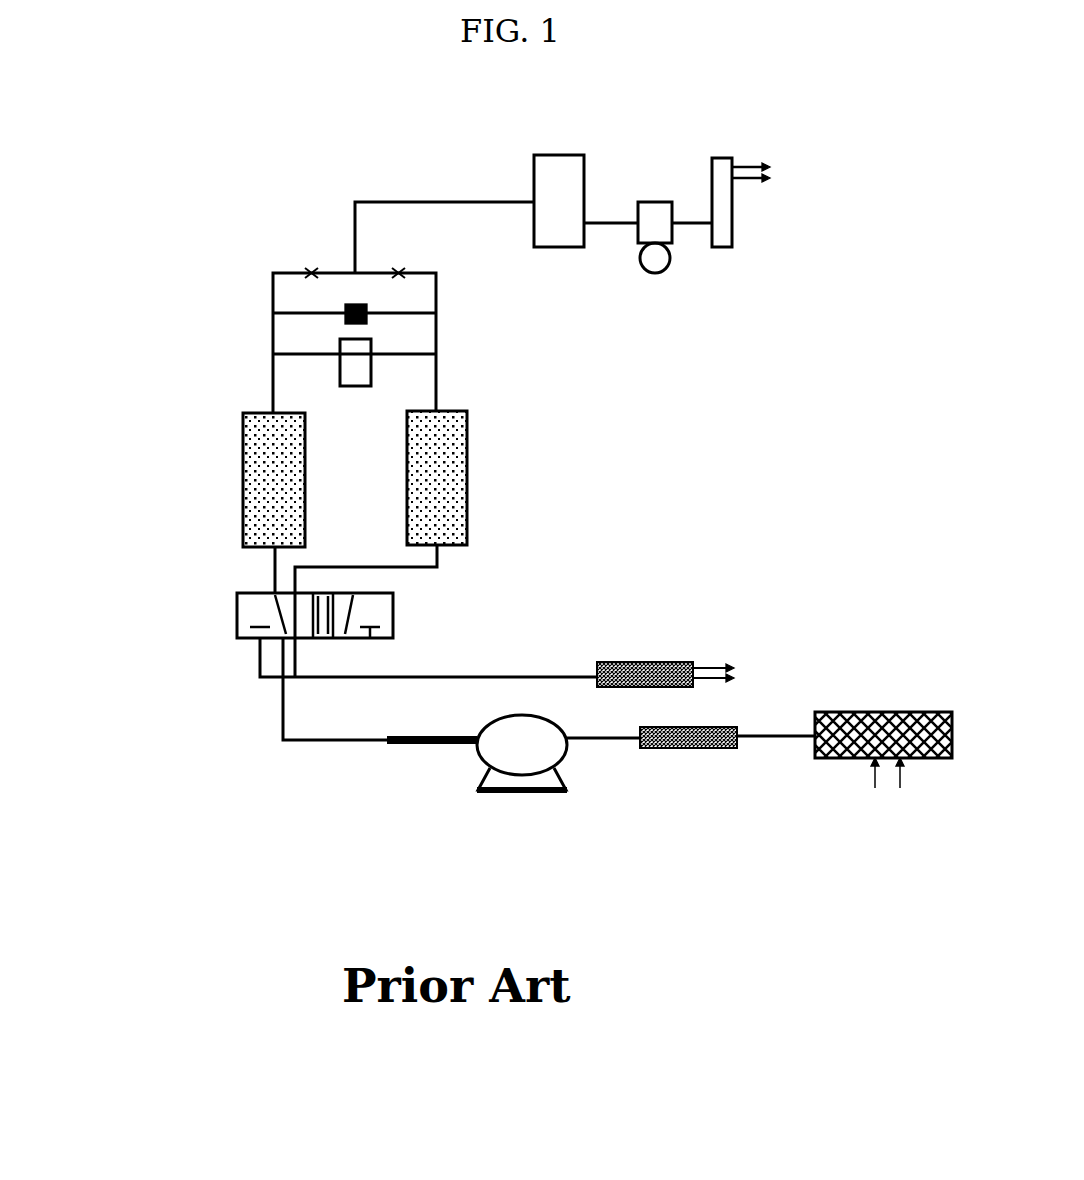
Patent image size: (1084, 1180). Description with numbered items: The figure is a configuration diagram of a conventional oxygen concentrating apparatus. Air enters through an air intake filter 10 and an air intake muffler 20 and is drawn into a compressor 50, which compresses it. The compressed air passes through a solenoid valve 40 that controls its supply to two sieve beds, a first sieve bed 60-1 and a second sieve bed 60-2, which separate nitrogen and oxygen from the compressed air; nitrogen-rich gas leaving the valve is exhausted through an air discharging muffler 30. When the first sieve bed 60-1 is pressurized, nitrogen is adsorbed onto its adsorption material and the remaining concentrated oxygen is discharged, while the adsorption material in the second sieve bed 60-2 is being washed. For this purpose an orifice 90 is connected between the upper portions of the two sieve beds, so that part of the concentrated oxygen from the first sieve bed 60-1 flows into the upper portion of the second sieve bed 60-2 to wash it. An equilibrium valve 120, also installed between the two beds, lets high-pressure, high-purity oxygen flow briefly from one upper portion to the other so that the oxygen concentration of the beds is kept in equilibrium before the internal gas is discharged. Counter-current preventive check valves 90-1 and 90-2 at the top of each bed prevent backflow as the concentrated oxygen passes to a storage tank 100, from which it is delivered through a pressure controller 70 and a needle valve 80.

The air intake filter 10 is at (830, 711).
The air intake muffler 20 is at (720, 750).
The air discharging muffler 30 is at (657, 660).
The solenoid valve 40 is at (383, 610).
The compressor 50 is at (565, 750).
The first sieve bed 60-1 is at (252, 470).
The second sieve bed 60-2 is at (448, 476).
The pressure controller 70 is at (655, 264).
The needle valve 80 is at (732, 243).
The orifice 90 is at (367, 310).
The first counter-current preventive check valve 90-1 is at (311, 274).
The second counter-current preventive check valve 90-2 is at (399, 274).
The storage tank 100 is at (560, 154).
The equilibrium valve 120 is at (363, 375).